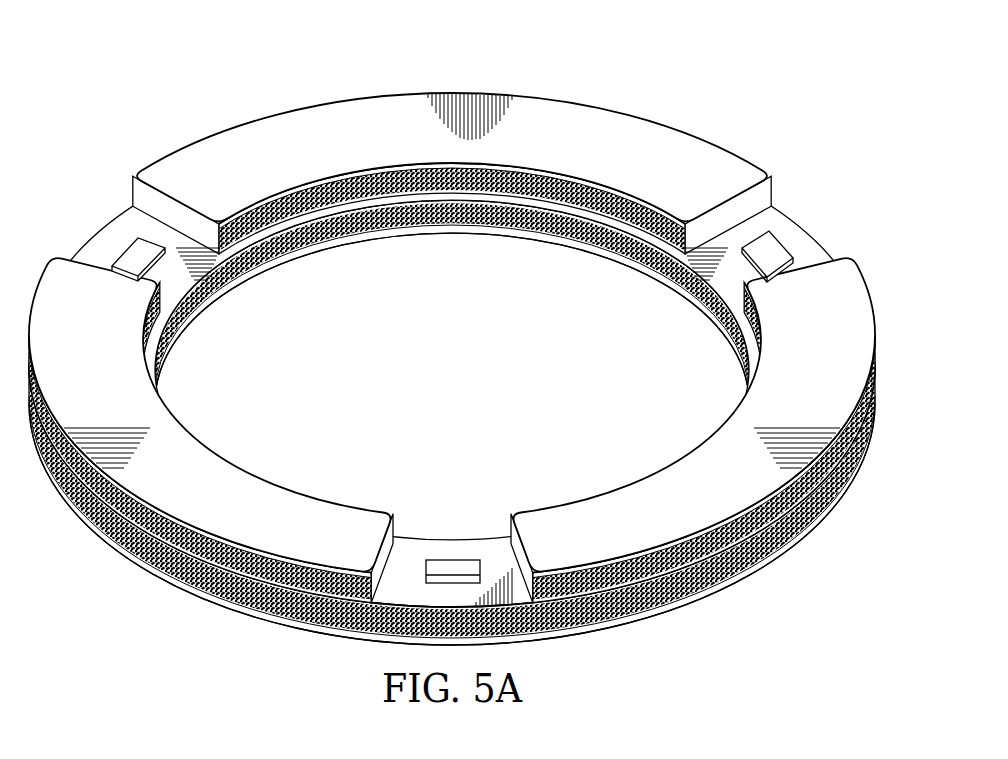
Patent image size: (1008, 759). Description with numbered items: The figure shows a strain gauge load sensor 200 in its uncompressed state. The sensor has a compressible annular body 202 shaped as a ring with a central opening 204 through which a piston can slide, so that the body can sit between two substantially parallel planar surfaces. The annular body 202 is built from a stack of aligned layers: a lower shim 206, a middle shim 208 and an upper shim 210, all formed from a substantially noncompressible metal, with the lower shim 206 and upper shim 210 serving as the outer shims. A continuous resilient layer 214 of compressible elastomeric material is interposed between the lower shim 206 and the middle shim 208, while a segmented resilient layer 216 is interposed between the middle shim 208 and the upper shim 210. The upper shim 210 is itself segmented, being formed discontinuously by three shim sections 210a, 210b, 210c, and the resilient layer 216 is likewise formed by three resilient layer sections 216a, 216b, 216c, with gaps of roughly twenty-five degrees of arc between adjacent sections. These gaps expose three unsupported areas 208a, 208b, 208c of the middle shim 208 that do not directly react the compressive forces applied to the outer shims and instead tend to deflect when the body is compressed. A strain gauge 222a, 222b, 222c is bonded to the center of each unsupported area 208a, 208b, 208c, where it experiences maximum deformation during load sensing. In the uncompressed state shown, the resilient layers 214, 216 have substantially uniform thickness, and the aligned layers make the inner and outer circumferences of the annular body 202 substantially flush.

The strain gauge load sensor 200 is at (230, 66).
The compressible annular body 202 is at (586, 120).
The central opening 204 is at (452, 301).
The lower shim 206 is at (452, 505).
The middle shim 208 is at (452, 384).
The unsupported area 208a is at (771, 215).
The unsupported area 208b is at (447, 541).
The unsupported area 208c is at (133, 215).
The upper shim 210 is at (452, 360).
The shim section 210a is at (452, 170).
The shim section 210b is at (693, 465).
The shim section 210c is at (211, 465).
The resilient layer 214 is at (103, 528).
The resilient layer 216 is at (448, 188).
The resilient layer section 216a is at (592, 202).
The resilient layer section 216b is at (664, 568).
The resilient layer section 216c is at (245, 570).
The strain gauge 222a is at (776, 257).
The strain gauge 222b is at (460, 570).
The strain gauge 222c is at (130, 258).